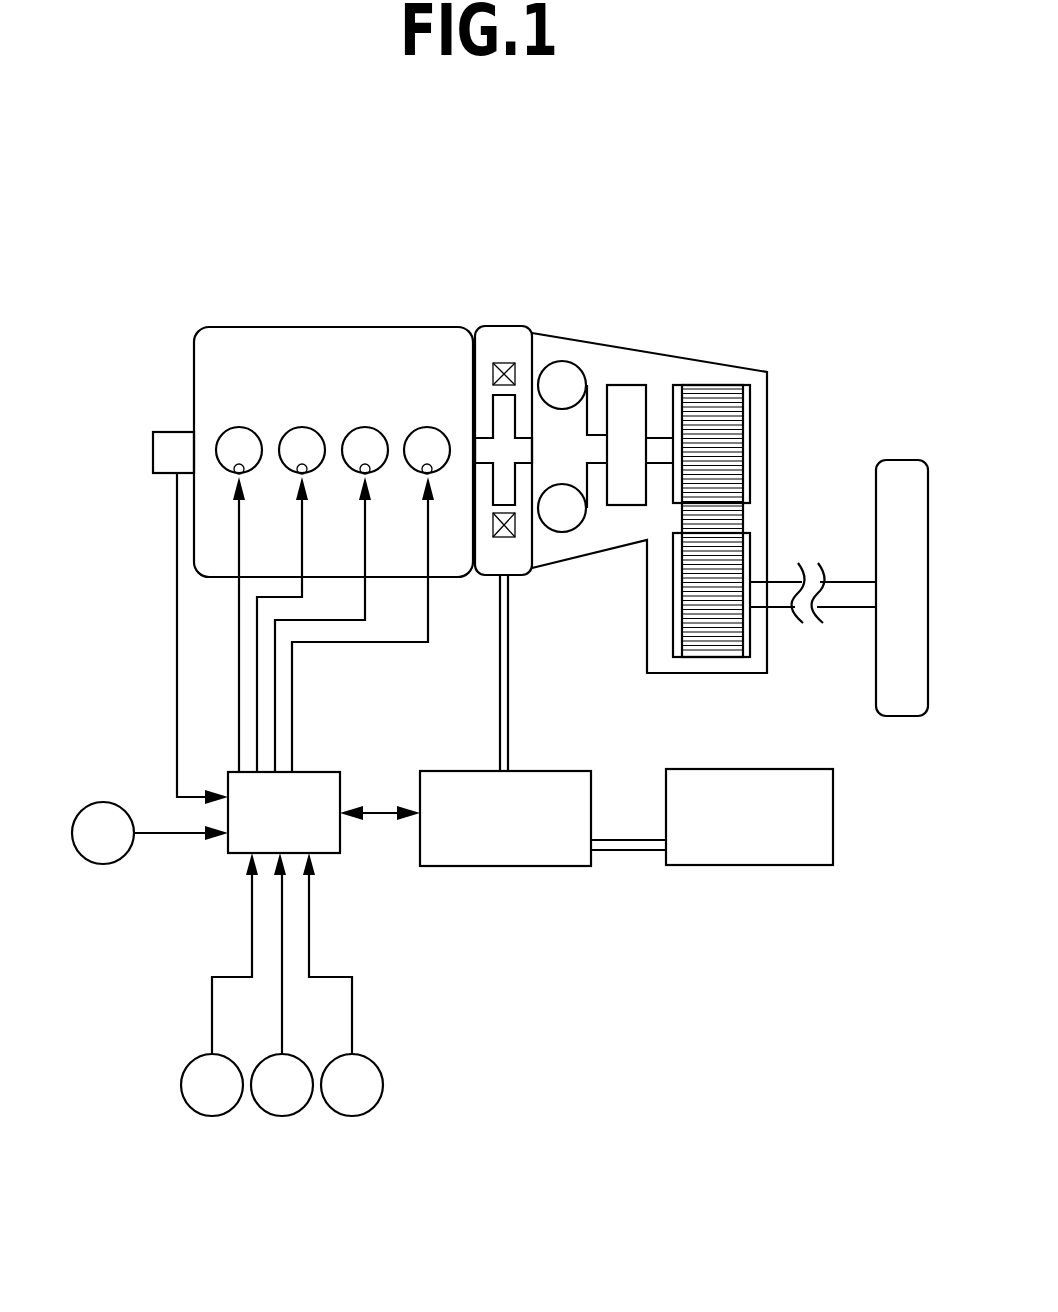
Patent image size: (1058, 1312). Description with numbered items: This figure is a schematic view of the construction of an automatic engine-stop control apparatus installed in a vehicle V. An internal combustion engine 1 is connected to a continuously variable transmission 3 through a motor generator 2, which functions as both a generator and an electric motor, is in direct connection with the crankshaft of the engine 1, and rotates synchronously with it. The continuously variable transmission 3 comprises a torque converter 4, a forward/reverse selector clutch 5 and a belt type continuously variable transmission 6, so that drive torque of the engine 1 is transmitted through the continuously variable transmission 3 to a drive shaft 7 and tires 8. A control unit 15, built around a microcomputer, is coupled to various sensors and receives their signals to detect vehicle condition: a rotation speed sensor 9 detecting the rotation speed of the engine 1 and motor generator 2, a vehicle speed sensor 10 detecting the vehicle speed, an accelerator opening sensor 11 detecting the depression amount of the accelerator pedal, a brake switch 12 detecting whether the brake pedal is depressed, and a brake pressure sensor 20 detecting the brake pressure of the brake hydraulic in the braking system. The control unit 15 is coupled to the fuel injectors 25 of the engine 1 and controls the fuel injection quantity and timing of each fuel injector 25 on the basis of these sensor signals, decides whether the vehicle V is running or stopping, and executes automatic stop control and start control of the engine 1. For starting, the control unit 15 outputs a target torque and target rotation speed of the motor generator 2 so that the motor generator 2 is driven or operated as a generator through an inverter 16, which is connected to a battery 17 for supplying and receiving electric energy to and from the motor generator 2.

The internal combustion engine 1 is at (295, 326).
The motor generator 2 is at (497, 326).
The continuously variable transmission 3 is at (550, 340).
The torque converter 4 is at (570, 377).
The forward/reverse selector clutch 5 is at (633, 384).
The belt type continuously variable transmission 6 is at (723, 384).
The drive shaft 7 is at (838, 580).
The tires 8 is at (902, 460).
The rotation speed sensor 9 is at (153, 447).
The vehicle speed sensor 10 is at (212, 1117).
The accelerator opening sensor 11 is at (282, 1117).
The brake switch 12 is at (103, 865).
The control unit 15 is at (312, 772).
The inverter 16 is at (505, 868).
The battery 17 is at (752, 868).
The brake pressure sensor 20 is at (356, 1117).
The fuel injectors 25 is at (245, 472).
The vehicle V is at (822, 298).